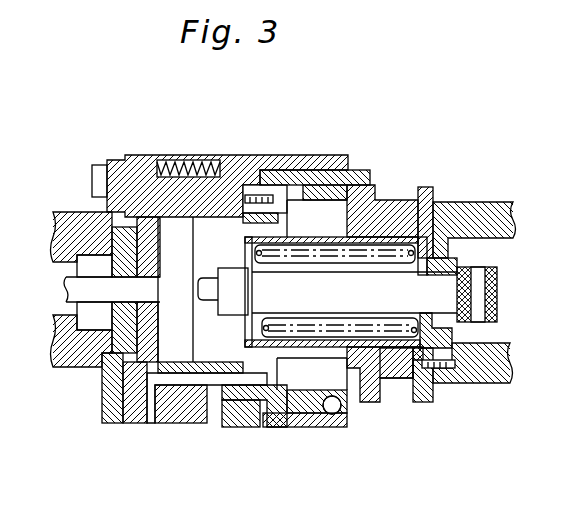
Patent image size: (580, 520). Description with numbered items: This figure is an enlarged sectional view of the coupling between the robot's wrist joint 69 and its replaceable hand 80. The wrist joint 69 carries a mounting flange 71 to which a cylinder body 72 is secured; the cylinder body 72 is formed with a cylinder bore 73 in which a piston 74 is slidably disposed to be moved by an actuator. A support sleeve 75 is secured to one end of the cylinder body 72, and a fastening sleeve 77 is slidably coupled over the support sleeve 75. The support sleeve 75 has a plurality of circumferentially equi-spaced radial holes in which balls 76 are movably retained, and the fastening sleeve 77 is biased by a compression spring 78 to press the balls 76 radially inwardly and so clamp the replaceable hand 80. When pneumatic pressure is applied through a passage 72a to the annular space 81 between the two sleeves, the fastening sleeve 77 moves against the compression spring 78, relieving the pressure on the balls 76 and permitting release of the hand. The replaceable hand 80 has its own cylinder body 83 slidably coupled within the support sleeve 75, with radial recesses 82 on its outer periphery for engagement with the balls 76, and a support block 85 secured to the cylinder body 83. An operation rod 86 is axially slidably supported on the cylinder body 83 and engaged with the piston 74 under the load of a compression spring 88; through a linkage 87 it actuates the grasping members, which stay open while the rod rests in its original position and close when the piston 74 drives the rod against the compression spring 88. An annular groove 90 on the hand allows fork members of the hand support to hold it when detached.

The wrist joint 69 is at (104, 204).
The mounting flange 71 is at (106, 394).
The cylinder body 72 is at (188, 425).
The passage 72a is at (150, 425).
The cylinder bore 73 is at (236, 427).
The piston 74 is at (195, 242).
The support sleeve 75 is at (305, 170).
The balls 76 is at (337, 414).
The fastening sleeve 77 is at (302, 427).
The compression spring 78 is at (207, 160).
The replaceable hand 80 is at (446, 198).
The annular space 81 is at (262, 427).
The radial recesses 82 is at (334, 185).
The cylinder body 83 is at (385, 200).
The support block 85 is at (480, 387).
The operation rod 86 is at (372, 302).
The linkage 87 is at (498, 292).
The compression spring 88 is at (395, 380).
The annular groove 90 is at (412, 190).